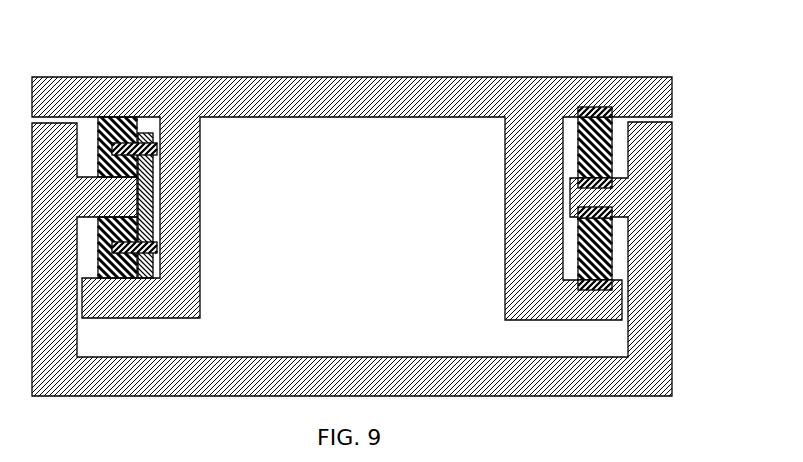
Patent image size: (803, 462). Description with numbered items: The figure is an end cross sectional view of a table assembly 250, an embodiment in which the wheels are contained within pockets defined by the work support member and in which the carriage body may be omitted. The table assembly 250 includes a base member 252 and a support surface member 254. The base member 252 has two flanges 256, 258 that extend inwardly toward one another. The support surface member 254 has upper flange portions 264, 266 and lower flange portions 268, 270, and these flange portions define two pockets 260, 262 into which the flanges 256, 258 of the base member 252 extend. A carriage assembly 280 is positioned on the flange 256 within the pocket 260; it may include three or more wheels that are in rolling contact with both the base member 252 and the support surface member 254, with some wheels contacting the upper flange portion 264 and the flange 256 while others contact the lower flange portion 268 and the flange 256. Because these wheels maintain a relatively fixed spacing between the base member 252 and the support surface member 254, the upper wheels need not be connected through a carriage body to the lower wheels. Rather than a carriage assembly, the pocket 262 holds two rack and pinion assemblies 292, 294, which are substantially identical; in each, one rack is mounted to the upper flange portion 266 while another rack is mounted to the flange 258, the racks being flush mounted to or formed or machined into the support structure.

The table assembly 250 is at (377, 214).
The base member 252 is at (377, 240).
The support surface member 254 is at (352, 187).
The flange 256 is at (90, 177).
The flange 258 is at (618, 176).
The pocket 260 is at (157, 126).
The pocket 262 is at (561, 132).
The upper flange portion 264 is at (83, 77).
The upper flange portion 266 is at (650, 77).
The lower flange portion 268 is at (135, 320).
The lower flange portion 270 is at (569, 320).
The carriage assembly 280 is at (224, 218).
The rack and pinion assembly 292 is at (501, 156).
The rack and pinion assembly 294 is at (492, 267).